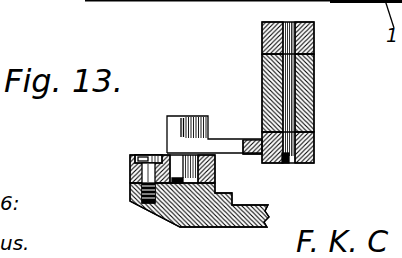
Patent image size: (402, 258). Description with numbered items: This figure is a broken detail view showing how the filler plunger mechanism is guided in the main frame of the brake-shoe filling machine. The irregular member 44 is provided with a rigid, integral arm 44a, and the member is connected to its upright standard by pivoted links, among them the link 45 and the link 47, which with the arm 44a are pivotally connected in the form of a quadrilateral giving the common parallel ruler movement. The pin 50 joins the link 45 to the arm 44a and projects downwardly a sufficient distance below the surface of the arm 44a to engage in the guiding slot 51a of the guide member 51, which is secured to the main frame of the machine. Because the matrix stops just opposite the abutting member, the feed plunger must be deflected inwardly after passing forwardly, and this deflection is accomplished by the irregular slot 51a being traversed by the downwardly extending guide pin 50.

The irregular member 44 is at (308, 43).
The rigid arm 44a is at (238, 158).
The pivoted link 45 is at (200, 97).
The pivoted link 47 is at (314, 100).
The pin 50 is at (170, 153).
The guide member 51 is at (132, 173).
The guiding slot 51a is at (185, 183).